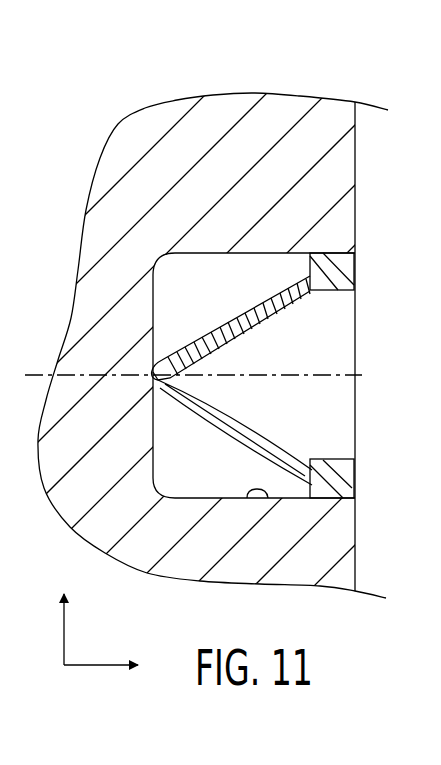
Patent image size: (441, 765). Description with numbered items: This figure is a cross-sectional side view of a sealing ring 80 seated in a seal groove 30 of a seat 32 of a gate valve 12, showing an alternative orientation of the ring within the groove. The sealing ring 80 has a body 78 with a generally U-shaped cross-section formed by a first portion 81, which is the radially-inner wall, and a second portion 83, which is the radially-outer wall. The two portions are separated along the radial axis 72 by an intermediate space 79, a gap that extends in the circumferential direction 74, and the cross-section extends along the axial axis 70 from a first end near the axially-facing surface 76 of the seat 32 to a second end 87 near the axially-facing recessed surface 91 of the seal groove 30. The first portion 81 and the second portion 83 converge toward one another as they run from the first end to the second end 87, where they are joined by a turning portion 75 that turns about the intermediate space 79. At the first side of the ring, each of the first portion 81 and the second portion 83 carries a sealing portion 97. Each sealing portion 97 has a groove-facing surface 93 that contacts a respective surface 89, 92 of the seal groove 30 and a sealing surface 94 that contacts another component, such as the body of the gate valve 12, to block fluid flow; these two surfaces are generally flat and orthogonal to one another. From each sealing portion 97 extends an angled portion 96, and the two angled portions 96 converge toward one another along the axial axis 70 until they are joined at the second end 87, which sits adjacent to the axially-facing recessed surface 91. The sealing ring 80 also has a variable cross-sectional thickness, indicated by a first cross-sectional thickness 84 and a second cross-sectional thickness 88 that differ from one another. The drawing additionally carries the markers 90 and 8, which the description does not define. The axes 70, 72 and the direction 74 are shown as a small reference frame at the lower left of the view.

The gate valve 12 is at (402, 128).
The seat 32 is at (345, 167).
The axially-facing surface 76 is at (355, 215).
The seal groove 30 is at (353, 424).
The intermediate space 79 is at (194, 390).
The sealing surface 94 is at (355, 280).
The sealing portion 97 is at (350, 265).
The groove-facing surface 93 is at (333, 243).
The first portion 81 is at (276, 283).
The body 78 is at (191, 343).
The second portion 83 is at (214, 421).
The angled portion 96 is at (239, 326).
The turning portion 75 is at (153, 384).
The axially-facing recessed surface 91 is at (155, 302).
The surface of the seal groove 92 is at (205, 252).
The second end 87 is at (148, 360).
The outer wall 90 is at (40, 375).
The sealing ring 80 is at (268, 423).
The seal 8 is at (364, 297).
The second cross-sectional thickness 88 is at (294, 308).
The first cross-sectional thickness 84 is at (332, 297).
The surface of the seal groove 89 is at (250, 493).
The radial axis 72 is at (65, 633).
The circumferential direction 74 is at (106, 650).
The axial axis 70 is at (88, 648).